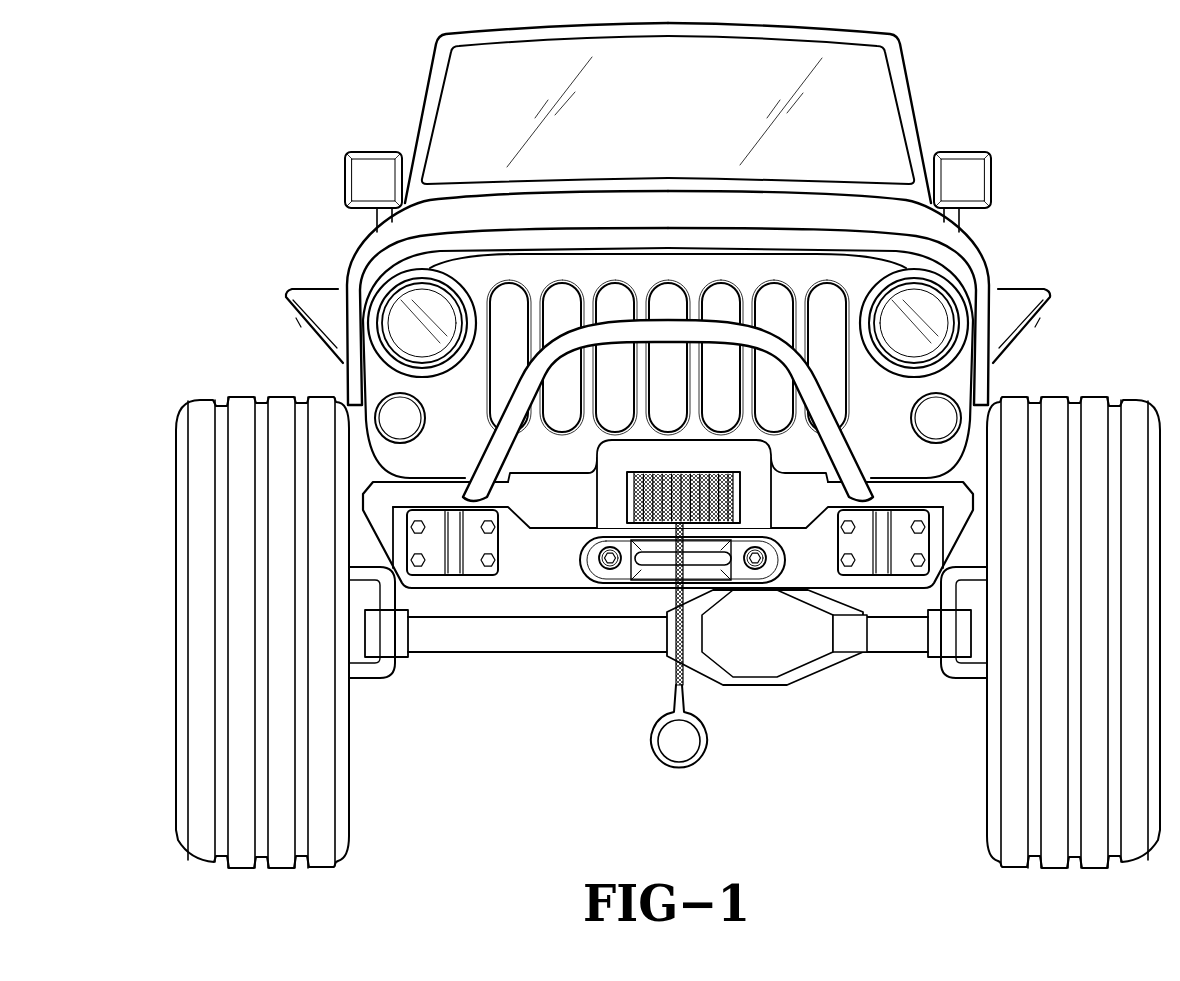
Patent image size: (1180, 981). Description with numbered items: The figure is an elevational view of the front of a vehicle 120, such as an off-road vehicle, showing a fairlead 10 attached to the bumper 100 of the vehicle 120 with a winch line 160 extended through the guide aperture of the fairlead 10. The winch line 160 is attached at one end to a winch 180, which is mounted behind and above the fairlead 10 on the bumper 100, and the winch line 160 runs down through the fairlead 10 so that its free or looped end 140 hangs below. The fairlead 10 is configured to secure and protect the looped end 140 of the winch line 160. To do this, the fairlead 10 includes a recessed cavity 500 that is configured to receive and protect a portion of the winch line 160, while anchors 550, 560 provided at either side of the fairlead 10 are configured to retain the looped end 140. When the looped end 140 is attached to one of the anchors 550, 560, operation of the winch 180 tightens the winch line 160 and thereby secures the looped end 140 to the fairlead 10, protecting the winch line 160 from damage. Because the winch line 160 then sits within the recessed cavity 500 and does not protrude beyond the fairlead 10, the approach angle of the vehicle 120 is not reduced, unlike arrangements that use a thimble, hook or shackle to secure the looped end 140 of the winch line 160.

The fairlead 10 is at (652, 592).
The bumper 100 is at (546, 558).
The vehicle 120 is at (990, 236).
The looped end 140 is at (677, 768).
The winch line 160 is at (673, 490).
The winch 180 is at (738, 480).
The recessed cavity 500 is at (707, 558).
The anchor 550 is at (606, 568).
The anchor 560 is at (768, 563).